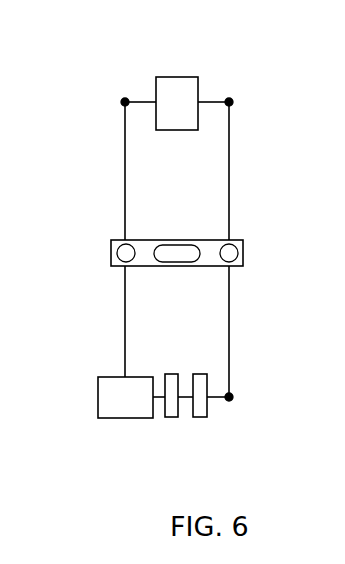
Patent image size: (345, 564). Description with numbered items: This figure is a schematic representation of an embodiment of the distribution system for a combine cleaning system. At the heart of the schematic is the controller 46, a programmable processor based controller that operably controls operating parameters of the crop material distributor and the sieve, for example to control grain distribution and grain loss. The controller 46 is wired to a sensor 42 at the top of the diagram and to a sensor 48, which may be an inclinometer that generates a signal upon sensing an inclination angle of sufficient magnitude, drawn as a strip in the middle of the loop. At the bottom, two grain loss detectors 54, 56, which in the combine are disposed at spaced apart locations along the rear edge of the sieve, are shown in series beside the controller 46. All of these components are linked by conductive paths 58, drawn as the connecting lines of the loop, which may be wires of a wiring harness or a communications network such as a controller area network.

The sensor 42 is at (177, 77).
The controller 46 is at (98, 397).
The sensor 48 is at (111, 253).
The grain loss detector 54 is at (176, 417).
The grain loss detector 56 is at (202, 417).
The conductive paths 58 is at (230, 173).